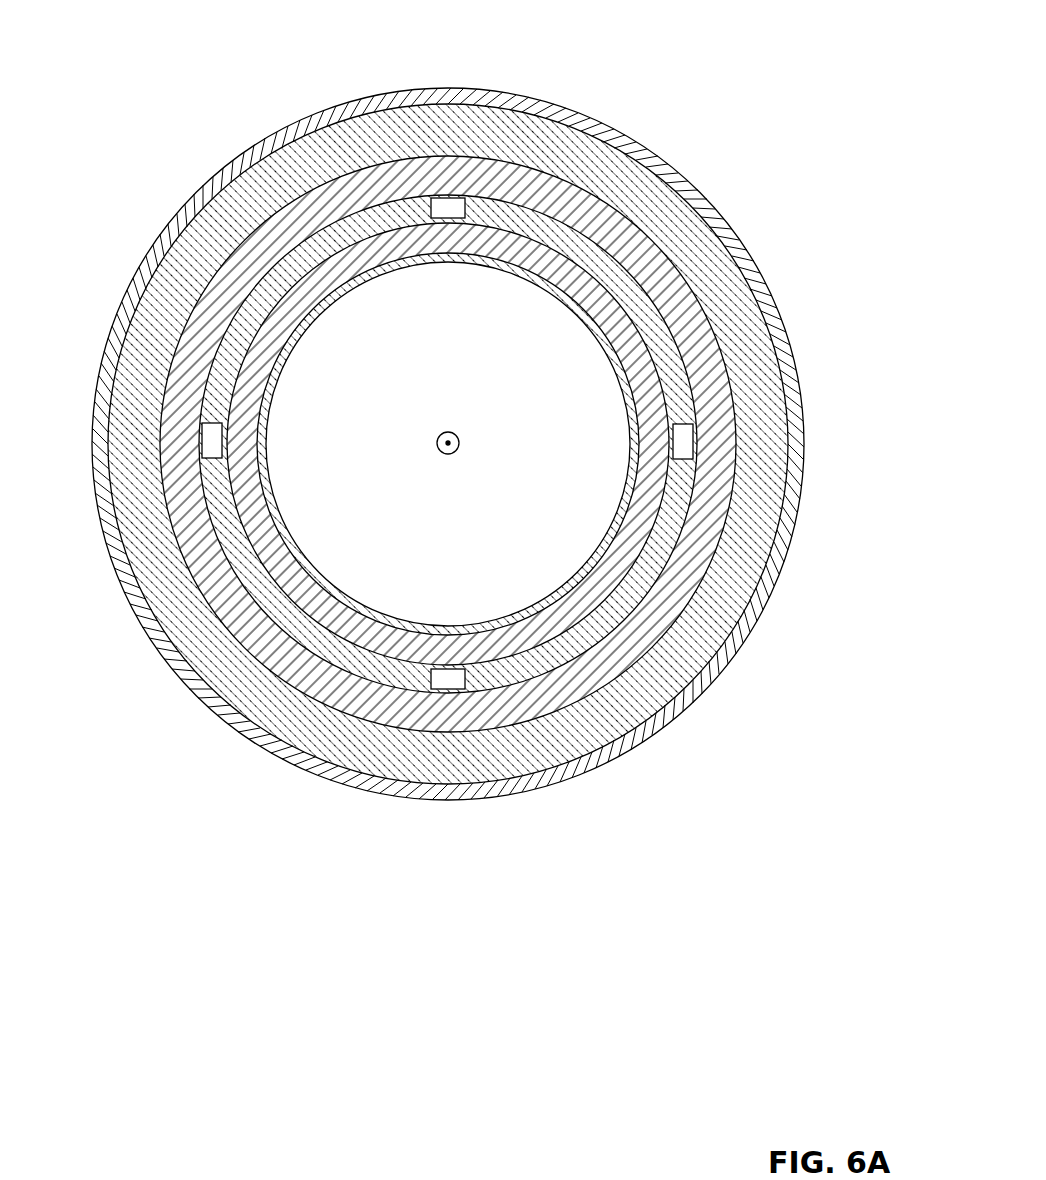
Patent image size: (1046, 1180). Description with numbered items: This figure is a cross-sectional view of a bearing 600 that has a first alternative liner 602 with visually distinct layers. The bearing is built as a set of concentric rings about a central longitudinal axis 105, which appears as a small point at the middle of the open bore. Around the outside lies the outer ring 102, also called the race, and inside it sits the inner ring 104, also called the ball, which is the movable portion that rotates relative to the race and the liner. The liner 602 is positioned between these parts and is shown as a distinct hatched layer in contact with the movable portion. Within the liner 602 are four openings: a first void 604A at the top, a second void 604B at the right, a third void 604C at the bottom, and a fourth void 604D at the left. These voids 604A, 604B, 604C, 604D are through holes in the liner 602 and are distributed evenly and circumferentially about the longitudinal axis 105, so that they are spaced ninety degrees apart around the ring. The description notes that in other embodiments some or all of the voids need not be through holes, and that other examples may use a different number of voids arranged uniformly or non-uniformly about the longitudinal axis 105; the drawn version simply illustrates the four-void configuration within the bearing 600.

The bearing 600 is at (657, 54).
The outer ring 102 is at (631, 174).
The inner ring 104 is at (240, 593).
The first alternative liner 602 is at (297, 243).
The first void 604A is at (456, 193).
The second void 604B is at (690, 416).
The third void 604C is at (452, 691).
The fourth void 604D is at (210, 418).
The longitudinal axis 105 is at (441, 432).